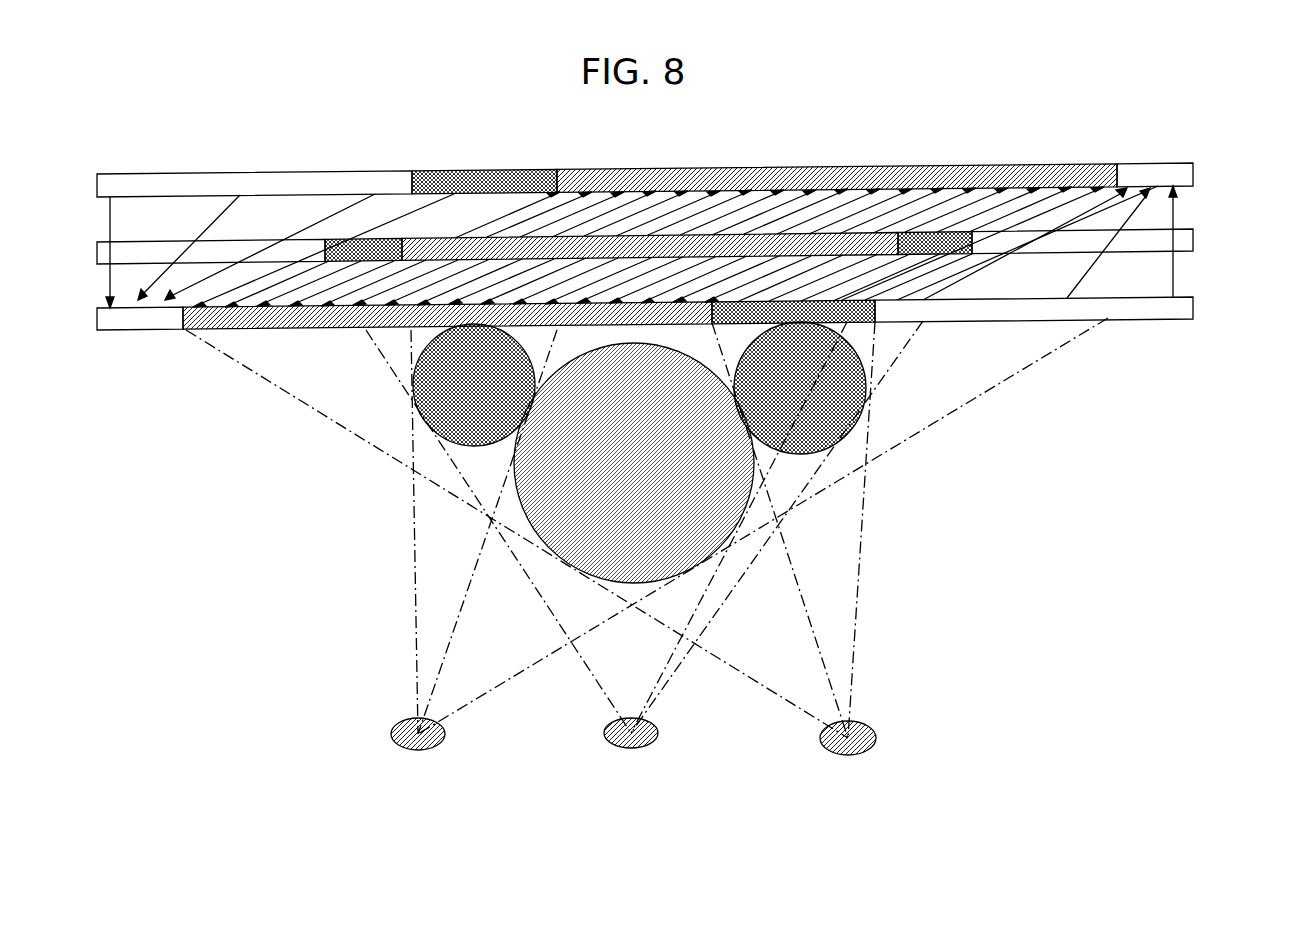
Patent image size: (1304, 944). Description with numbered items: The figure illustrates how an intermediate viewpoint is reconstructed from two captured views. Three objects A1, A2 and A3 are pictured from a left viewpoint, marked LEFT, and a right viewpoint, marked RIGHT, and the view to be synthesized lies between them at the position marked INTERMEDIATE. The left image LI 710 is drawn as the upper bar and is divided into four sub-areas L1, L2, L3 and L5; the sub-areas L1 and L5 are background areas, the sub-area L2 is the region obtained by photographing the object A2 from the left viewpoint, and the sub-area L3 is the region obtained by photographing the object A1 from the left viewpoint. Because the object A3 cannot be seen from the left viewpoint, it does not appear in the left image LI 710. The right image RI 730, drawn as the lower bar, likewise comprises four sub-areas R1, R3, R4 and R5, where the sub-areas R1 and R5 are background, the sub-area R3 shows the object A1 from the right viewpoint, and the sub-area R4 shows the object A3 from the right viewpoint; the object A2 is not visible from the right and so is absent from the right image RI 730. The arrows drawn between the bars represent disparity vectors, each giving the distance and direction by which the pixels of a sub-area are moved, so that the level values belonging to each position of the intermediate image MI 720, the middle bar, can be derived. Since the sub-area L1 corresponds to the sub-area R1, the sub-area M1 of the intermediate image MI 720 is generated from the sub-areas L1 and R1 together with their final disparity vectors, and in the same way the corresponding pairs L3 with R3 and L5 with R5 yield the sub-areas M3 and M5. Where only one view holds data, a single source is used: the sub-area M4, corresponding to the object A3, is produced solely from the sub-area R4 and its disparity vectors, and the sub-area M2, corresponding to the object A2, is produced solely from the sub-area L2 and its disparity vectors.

The left image 710 is at (687, 163).
The intermediate image 720 is at (687, 249).
The right image 730 is at (687, 351).
The sub-area L1 is at (247, 172).
The sub-area L2 is at (487, 171).
The sub-area L3 is at (812, 165).
The sub-area L5 is at (1156, 163).
The sub-area M1 is at (237, 240).
The sub-area M2 is at (380, 238).
The sub-area M3 is at (858, 248).
The sub-area M4 is at (943, 252).
The sub-area M5 is at (1120, 246).
The sub-area R1 is at (138, 324).
The sub-area R3 is at (311, 324).
The sub-area R4 is at (858, 312).
The sub-area R5 is at (1143, 313).
The object A1 is at (634, 463).
The object A2 is at (474, 385).
The object A3 is at (800, 388).
The left image LI is at (71, 187).
The intermediate image MI is at (70, 253).
The right image RI is at (71, 319).
The left eye viewing position LEFT is at (418, 753).
The intermediate eye viewing position INTERMEDIATE is at (631, 753).
The right eye viewing position RIGHT is at (845, 752).